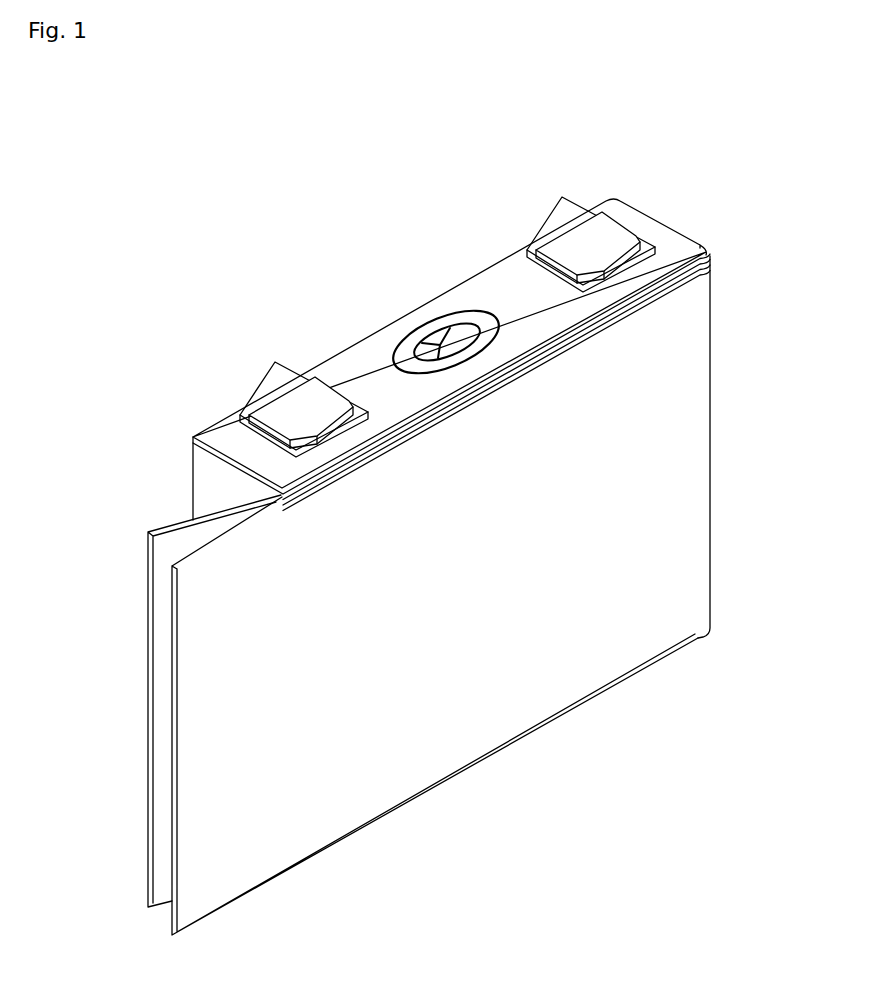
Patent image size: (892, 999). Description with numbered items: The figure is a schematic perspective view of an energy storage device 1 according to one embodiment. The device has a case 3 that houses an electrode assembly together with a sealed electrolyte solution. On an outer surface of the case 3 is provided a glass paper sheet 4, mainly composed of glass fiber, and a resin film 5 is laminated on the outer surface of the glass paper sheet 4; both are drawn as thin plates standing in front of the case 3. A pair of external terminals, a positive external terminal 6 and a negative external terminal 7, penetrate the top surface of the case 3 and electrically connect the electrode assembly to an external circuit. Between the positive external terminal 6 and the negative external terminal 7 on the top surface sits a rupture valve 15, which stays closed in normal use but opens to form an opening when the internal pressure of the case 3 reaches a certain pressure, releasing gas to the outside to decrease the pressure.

The energy storage device 1 is at (675, 189).
The case 3 is at (363, 363).
The glass paper sheet 4 is at (160, 528).
The resin film 5 is at (218, 883).
The positive external terminal 6 is at (585, 239).
The negative external terminal 7 is at (295, 405).
The rupture valve 15 is at (436, 333).